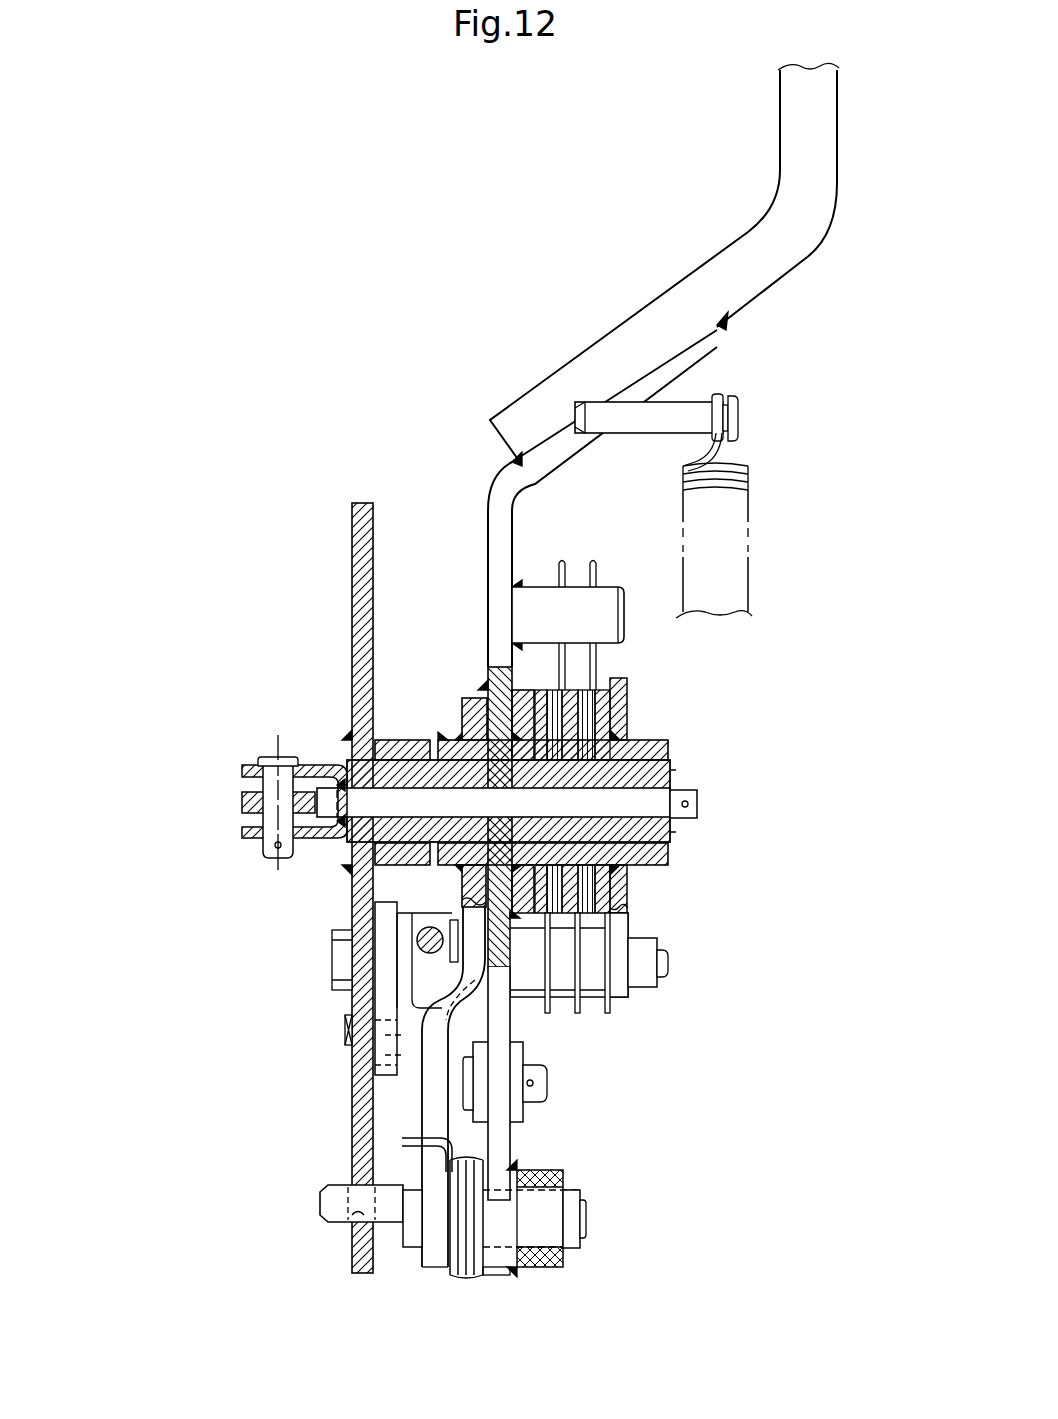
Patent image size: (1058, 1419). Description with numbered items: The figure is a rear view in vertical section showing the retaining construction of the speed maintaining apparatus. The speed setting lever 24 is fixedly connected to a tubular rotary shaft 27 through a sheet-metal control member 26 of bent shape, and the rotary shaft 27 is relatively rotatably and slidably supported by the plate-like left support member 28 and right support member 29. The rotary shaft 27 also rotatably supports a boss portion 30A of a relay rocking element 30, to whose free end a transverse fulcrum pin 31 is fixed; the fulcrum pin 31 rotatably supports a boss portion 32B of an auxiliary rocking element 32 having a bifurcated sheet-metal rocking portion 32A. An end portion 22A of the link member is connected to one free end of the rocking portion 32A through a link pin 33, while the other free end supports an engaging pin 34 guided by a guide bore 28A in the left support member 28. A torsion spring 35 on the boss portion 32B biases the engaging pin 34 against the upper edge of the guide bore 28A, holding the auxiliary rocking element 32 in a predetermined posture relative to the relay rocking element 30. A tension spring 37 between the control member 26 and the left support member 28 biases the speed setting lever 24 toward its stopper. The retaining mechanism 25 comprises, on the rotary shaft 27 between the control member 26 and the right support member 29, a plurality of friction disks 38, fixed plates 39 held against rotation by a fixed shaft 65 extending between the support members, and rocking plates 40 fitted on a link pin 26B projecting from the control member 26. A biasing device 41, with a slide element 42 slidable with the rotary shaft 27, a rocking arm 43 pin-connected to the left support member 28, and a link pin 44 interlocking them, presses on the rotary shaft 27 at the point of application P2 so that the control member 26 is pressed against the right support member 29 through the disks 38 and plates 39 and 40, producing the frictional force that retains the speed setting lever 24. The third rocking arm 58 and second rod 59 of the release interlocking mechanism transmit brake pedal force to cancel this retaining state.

The speed setting lever 24 is at (780, 126).
The control member 26 is at (488, 560).
The link pin 26B is at (616, 606).
The tension spring 37 is at (748, 478).
The rocking plates 40 is at (593, 563).
The left support member 28 is at (352, 576).
The guide bore 28A is at (356, 1216).
The boss portion 30A is at (445, 740).
The rotary shaft 27 is at (655, 838).
The friction disks 38 is at (597, 690).
The fixed plates 39 is at (618, 733).
The right support member 29 is at (628, 886).
The retaining mechanism 25 is at (560, 926).
The fixed shaft 65 is at (590, 985).
The biasing device 41 is at (232, 714).
The slide element 42 is at (252, 766).
The rocking arm 43 is at (242, 803).
The link pin 44 is at (262, 847).
The point of application P2 is at (275, 722).
The third rocking arm 58 is at (385, 1065).
The second rod 59 is at (420, 935).
The relay rocking element 30 is at (418, 1113).
The link pin 33 is at (547, 1076).
The end portion 22A is at (520, 1110).
The rocking portion 32A is at (507, 1145).
The engaging pin 34 is at (320, 1205).
The torsion spring 35 is at (463, 1278).
The boss portion 32B is at (527, 1270).
The fulcrum pin 31 is at (585, 1226).
The auxiliary rocking element 32 is at (543, 1284).